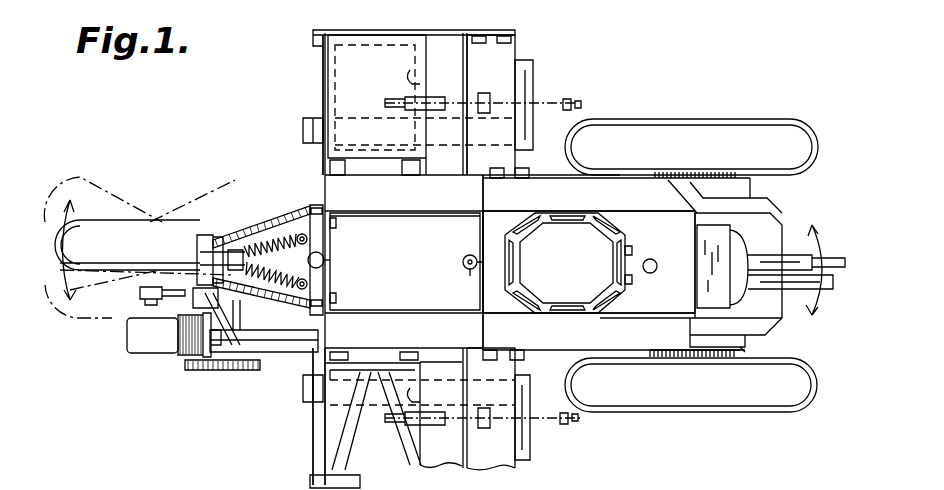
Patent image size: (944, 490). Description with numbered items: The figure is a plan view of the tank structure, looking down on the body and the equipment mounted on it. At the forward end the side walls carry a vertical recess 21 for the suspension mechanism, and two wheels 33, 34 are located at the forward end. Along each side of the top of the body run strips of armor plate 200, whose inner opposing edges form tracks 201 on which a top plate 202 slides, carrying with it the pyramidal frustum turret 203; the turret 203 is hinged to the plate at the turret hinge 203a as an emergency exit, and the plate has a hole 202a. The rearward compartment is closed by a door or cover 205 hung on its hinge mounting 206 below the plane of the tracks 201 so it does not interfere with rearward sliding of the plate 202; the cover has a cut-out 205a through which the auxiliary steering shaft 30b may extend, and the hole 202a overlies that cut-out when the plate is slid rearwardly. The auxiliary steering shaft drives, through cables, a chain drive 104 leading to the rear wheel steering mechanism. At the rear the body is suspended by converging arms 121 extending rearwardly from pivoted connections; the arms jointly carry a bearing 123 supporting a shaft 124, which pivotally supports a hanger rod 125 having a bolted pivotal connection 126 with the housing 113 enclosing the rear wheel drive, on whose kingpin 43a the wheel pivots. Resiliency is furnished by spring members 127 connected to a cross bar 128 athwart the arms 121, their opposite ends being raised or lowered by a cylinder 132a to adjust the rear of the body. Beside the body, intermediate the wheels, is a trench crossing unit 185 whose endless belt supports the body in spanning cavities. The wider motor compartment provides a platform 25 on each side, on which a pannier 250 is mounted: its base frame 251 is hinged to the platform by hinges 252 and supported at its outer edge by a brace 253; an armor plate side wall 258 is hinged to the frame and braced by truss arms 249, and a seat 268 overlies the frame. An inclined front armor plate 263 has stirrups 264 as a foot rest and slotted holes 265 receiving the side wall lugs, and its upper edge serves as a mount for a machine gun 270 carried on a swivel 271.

The armor plate side wall 258 is at (362, 36).
The pannier 250 is at (411, 29).
The slotted holes 265 is at (480, 37).
The inclined front armor plate 263 is at (505, 52).
The stirrups 264 is at (535, 77).
The machine gun 270 is at (546, 103).
The base frame 251 is at (424, 75).
The seat 268 is at (352, 70).
The truss arms 249 is at (323, 94).
The trench crossing unit 185 is at (303, 129).
The platform 25 is at (368, 172).
The hinges 252 is at (342, 176).
The tracks 201 is at (478, 210).
The strips of armor plate 200 is at (580, 202).
The door or cover 205 is at (452, 282).
The hinge mounting 206 is at (336, 224).
The cylinder 132a is at (330, 261).
The cut-out 205a is at (470, 255).
The auxiliary steering shaft 30b is at (470, 276).
The pyramidal frustum turret 203 is at (590, 270).
The turret hinge 203a is at (630, 250).
The hole 202a is at (648, 272).
The top plate 202 is at (653, 338).
The vertical recess 21 is at (760, 198).
The wheel 33 is at (750, 134).
The wheel 34 is at (777, 400).
The brace 253 is at (345, 432).
The swivel 271 is at (462, 488).
The housing 113 is at (132, 262).
The kingpin 43a is at (130, 222).
The bearing 123 is at (197, 256).
The converging arms 121 is at (270, 208).
The cross bar 128 is at (233, 234).
The spring members 127 is at (308, 259).
The bolted pivotal connection 126 is at (140, 292).
The hanger rod 125 is at (165, 322).
The shaft 124 is at (170, 356).
The chain drive 104 is at (205, 372).